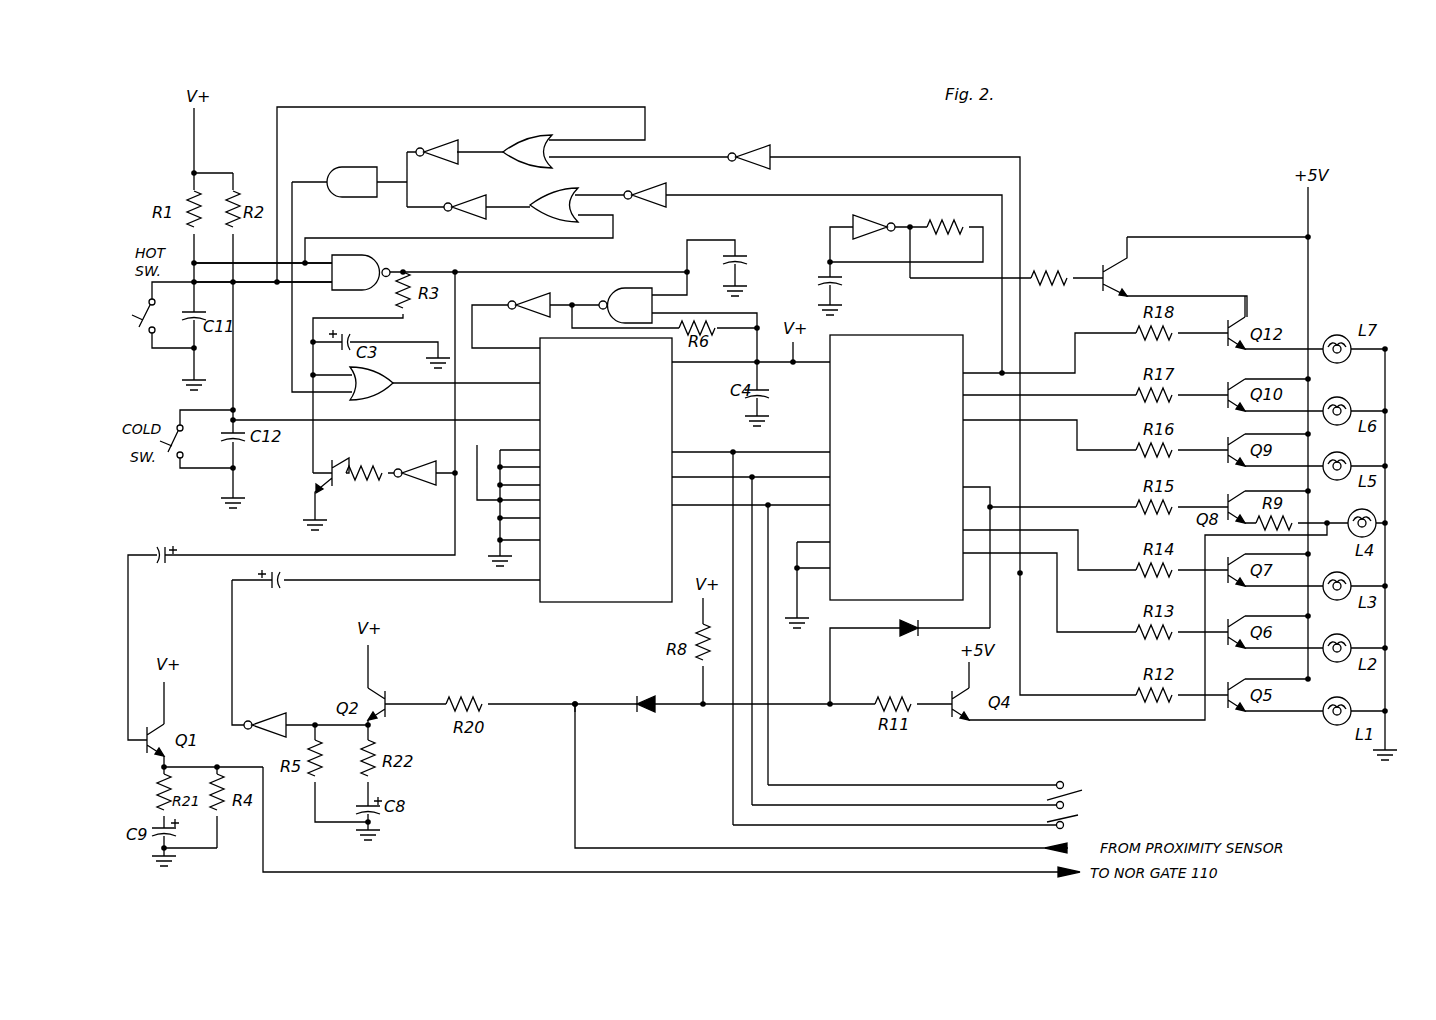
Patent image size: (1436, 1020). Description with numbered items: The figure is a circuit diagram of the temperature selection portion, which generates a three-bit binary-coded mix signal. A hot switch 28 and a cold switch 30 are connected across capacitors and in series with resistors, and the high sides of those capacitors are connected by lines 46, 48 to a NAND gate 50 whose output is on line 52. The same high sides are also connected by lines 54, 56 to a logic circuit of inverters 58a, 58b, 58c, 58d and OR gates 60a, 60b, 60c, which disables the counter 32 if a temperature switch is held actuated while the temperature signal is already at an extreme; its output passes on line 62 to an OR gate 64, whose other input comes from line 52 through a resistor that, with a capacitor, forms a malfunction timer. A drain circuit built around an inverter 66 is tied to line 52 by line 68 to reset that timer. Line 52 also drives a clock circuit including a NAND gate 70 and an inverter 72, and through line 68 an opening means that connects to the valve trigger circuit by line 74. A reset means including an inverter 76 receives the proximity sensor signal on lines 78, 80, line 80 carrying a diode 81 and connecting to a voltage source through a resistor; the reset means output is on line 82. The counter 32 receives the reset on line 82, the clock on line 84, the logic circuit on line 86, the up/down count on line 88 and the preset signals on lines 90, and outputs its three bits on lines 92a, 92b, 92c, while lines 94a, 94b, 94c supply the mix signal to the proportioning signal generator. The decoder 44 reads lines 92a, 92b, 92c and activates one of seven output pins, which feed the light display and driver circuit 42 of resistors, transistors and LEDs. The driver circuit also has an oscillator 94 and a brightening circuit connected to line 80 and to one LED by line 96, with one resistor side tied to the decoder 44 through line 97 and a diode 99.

The hot switch 28 is at (153, 338).
The cold switch 30 is at (180, 420).
The counter 32 is at (538, 600).
The light display and driver circuit 42 is at (1195, 233).
The light display logic circuit 44 is at (963, 355).
The line 46 is at (274, 261).
The line 48 is at (256, 288).
The NAND gate 50 is at (387, 267).
The output line 52 is at (495, 270).
The line 54 is at (630, 102).
The line 56 is at (617, 232).
The inverter 58a is at (764, 150).
The inverter 58b is at (672, 205).
The inverter 58c is at (452, 141).
The inverter 58d is at (479, 201).
The OR gate 60a is at (552, 138).
The OR gate 60b is at (590, 192).
The OR gate 60c is at (358, 164).
The line 62 is at (294, 213).
The OR gate 64 is at (394, 386).
The inverter 66 is at (418, 487).
The line 68 is at (403, 547).
The NAND gate 70 is at (605, 301).
The inverter 72 is at (528, 300).
The line 74 is at (526, 864).
The inverter 76 is at (264, 716).
The line 78 is at (686, 840).
The line 80 is at (545, 704).
The diode 81 is at (648, 712).
The line 82 is at (440, 590).
The line 84 is at (518, 349).
The line 86 is at (508, 379).
The line 88 is at (511, 419).
The lines 90 is at (492, 516).
The line 92a is at (770, 522).
The line 92b is at (772, 484).
The line 92c is at (809, 450).
The oscillator 94 is at (902, 222).
The line 94a is at (1013, 778).
The line 94b is at (939, 795).
The line 94c is at (927, 819).
The line 96 is at (1103, 720).
The line 97 is at (986, 604).
The diode 99 is at (903, 637).